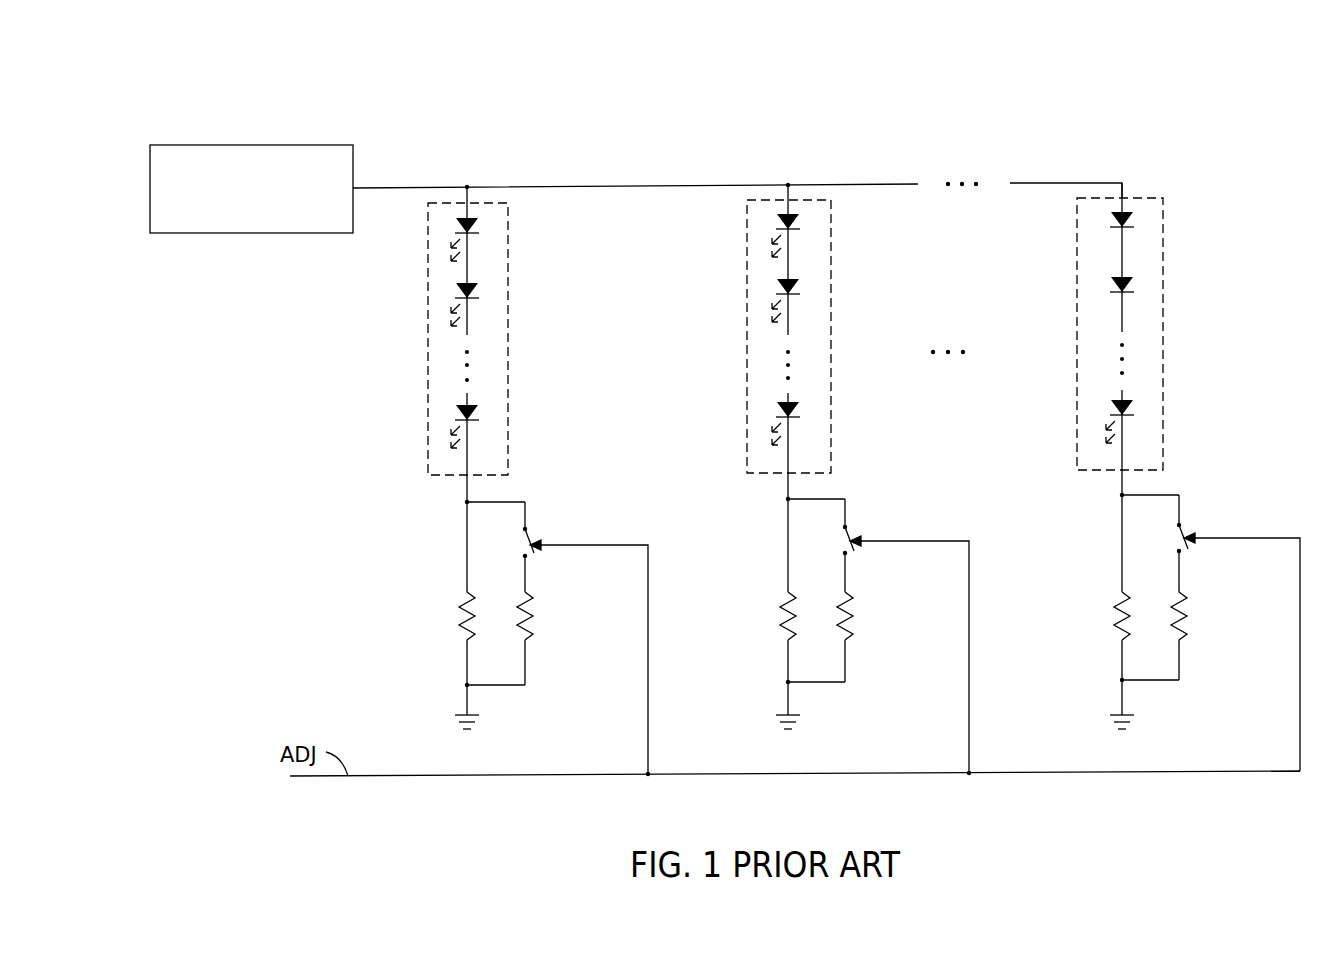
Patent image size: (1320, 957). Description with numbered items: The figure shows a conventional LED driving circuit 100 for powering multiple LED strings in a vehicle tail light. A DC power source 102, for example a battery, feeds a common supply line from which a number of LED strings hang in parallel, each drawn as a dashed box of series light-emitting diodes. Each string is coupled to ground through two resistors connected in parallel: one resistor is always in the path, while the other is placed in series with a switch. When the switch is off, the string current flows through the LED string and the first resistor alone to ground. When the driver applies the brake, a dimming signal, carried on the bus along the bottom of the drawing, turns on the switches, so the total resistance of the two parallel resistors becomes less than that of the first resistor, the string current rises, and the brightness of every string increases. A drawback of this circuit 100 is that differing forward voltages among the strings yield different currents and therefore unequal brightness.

The LED driving circuit 100 is at (473, 114).
The DC power source 102 is at (272, 145).